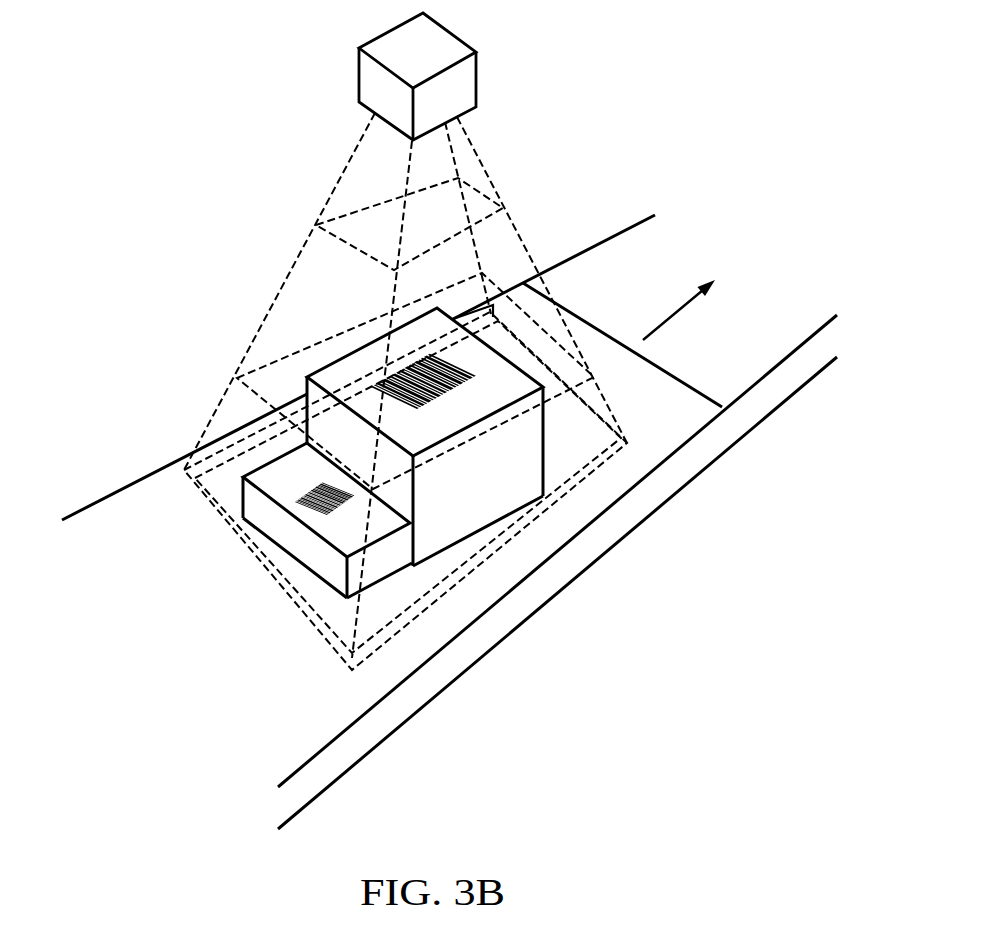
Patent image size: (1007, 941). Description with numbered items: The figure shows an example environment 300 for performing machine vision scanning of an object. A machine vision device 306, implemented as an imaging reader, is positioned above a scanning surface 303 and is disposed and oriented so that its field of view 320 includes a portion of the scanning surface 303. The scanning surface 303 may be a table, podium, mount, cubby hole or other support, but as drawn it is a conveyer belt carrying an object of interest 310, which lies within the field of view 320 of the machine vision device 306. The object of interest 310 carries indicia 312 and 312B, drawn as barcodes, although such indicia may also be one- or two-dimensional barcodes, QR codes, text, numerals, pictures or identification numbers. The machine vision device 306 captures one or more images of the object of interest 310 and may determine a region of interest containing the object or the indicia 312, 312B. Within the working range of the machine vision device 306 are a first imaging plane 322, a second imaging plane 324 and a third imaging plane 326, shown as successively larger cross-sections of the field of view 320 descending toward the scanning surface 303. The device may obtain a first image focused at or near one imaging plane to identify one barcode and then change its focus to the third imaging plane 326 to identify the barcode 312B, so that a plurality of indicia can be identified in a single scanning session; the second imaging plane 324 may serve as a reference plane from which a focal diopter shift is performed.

The environment 300 is at (186, 113).
The scanning surface 303 is at (695, 417).
The machine vision device 306 is at (452, 31).
The object of interest 310 is at (490, 525).
The indicia 312 is at (477, 378).
The indicia 312B is at (280, 492).
The field of view 320 is at (343, 180).
The first imaging plane 322 is at (317, 228).
The second imaging plane 324 is at (298, 353).
The third imaging plane 326 is at (313, 610).